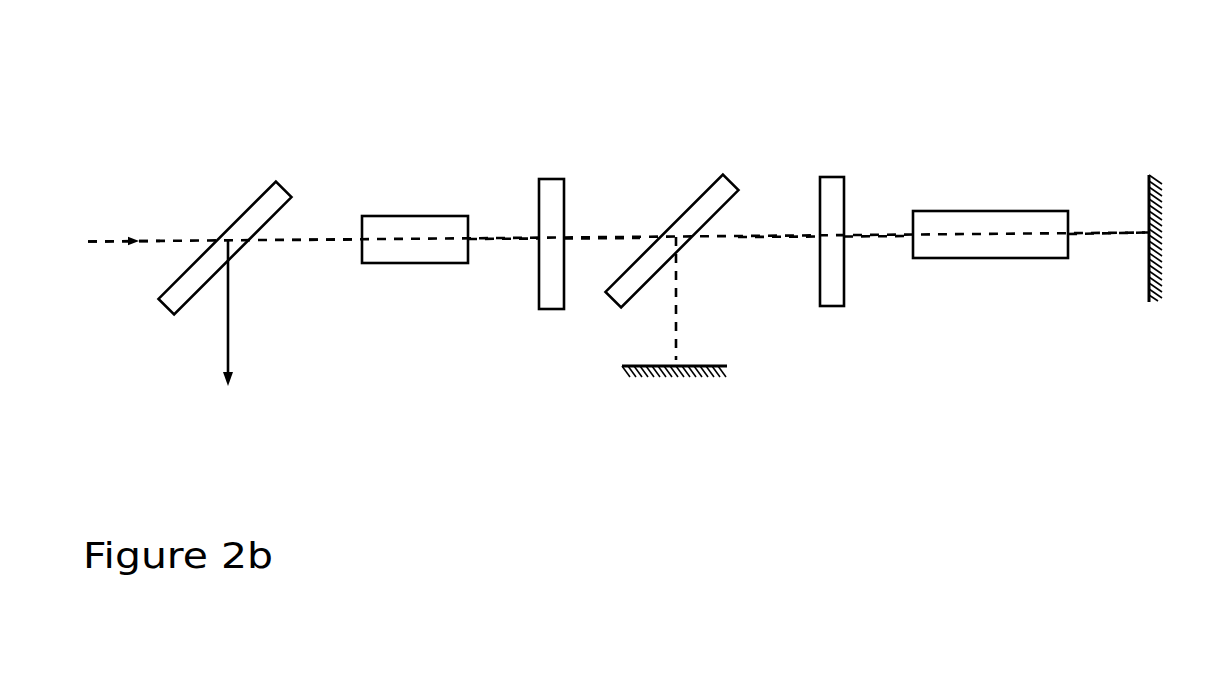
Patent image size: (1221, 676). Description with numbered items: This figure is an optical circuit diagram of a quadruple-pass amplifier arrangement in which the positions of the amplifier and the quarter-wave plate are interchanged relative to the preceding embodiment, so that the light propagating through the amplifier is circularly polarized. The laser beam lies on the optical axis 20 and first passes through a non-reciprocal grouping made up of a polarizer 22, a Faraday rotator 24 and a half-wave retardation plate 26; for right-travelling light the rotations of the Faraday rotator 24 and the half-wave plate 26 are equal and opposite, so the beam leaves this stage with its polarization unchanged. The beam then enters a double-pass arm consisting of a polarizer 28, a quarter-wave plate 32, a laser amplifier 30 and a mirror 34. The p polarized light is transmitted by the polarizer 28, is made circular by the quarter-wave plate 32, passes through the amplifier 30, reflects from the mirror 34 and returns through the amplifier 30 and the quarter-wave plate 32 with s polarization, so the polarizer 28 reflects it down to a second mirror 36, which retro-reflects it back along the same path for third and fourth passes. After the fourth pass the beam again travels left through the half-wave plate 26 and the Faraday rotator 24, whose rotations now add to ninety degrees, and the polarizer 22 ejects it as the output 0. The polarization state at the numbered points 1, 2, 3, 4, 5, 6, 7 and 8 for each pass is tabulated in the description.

The output 0 is at (228, 337).
The point 1 is at (188, 240).
The point 2 is at (328, 238).
The point 3 is at (513, 238).
The point 4 is at (621, 238).
The point 5 is at (676, 308).
The point 6 is at (763, 235).
The point 7 is at (880, 232).
The point 8 is at (1105, 232).
The optical axis 20 is at (157, 242).
The polarizer 22 is at (248, 208).
The Faraday rotator 24 is at (408, 215).
The half-wave retardation plate 26 is at (551, 179).
The polarizer 28 is at (692, 200).
The laser amplifier 30 is at (978, 210).
The quarter-wave plate 32 is at (832, 177).
The mirror 34 is at (1150, 175).
The second mirror 36 is at (705, 375).